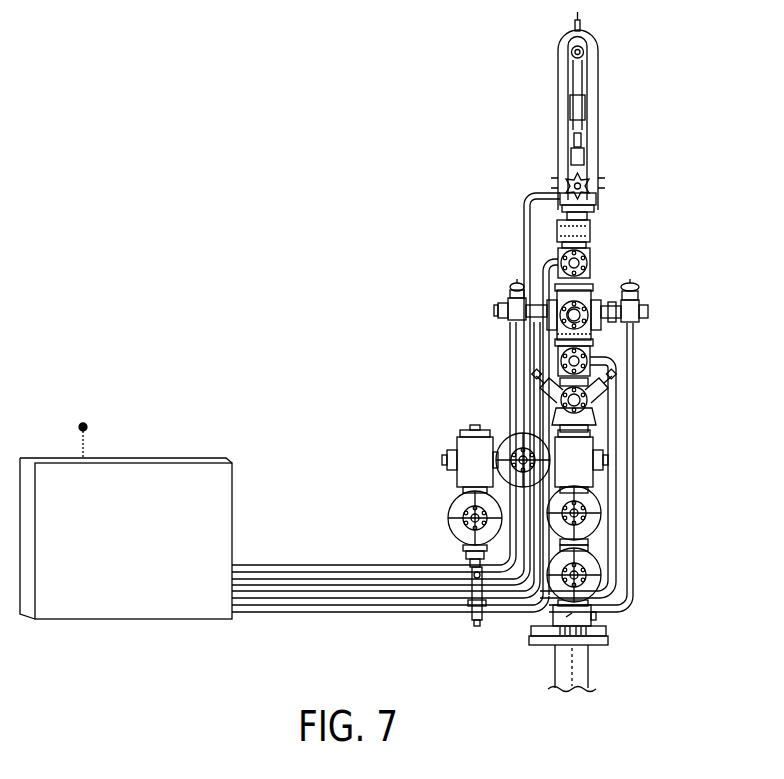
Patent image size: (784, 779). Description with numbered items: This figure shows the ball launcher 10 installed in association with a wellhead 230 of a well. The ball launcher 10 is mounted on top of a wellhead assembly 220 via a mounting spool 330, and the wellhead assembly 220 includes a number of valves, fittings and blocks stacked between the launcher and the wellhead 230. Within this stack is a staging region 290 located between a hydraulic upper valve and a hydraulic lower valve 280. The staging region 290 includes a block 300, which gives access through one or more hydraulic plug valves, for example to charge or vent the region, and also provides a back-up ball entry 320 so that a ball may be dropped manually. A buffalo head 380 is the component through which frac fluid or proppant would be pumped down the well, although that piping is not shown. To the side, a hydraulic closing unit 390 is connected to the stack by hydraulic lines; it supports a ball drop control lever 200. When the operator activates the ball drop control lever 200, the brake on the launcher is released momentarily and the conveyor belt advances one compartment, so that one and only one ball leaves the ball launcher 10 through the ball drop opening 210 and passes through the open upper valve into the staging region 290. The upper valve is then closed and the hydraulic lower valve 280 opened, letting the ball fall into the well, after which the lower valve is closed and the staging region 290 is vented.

The ball launcher 10 is at (558, 79).
The ball drop control lever 200 is at (88, 446).
The ball drop opening 210 is at (559, 262).
The wellhead assembly 220 is at (608, 637).
The wellhead 230 is at (586, 665).
The hydraulic lower valve 280 is at (558, 360).
The staging region 290 is at (660, 258).
The block 300 is at (557, 321).
The back-up ball entry 320 is at (583, 305).
The mounting spool 330 is at (598, 199).
The buffalo head 380 is at (586, 418).
The hydraulic closing unit 390 is at (116, 588).